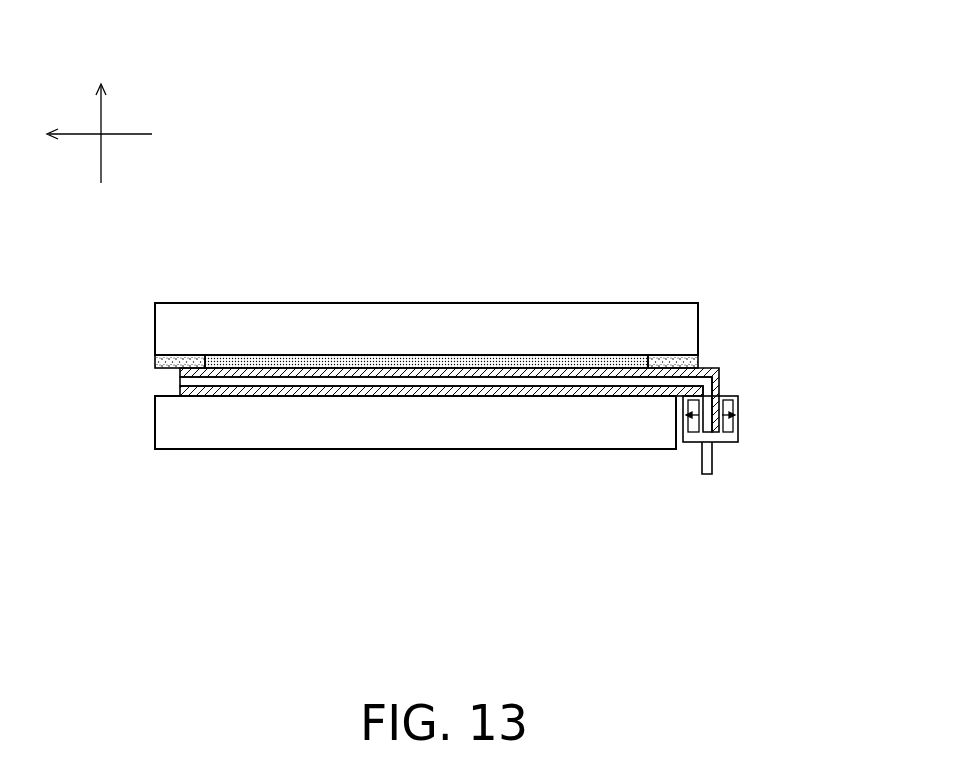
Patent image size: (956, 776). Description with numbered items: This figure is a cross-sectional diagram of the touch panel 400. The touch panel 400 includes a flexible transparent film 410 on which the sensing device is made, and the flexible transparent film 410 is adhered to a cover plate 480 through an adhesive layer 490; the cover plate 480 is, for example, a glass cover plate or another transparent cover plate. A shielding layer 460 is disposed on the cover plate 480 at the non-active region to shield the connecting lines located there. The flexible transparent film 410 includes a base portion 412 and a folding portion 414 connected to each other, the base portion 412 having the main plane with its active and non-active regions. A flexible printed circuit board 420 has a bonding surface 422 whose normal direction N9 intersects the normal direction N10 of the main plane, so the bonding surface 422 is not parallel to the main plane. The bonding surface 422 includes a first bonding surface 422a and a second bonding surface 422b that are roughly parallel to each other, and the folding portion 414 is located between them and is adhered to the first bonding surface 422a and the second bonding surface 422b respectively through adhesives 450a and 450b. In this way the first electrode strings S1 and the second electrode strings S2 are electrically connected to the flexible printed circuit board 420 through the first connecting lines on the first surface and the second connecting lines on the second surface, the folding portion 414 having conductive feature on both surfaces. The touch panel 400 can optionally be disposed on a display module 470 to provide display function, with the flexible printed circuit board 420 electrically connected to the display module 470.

The touch panel 400 is at (858, 622).
The flexible transparent film 410 is at (449, 476).
The base portion 412 is at (513, 379).
The folding portion 414 is at (682, 406).
The flexible printed circuit board 420 is at (720, 490).
The bonding surface 422 is at (720, 473).
The first bonding surface 422a is at (718, 432).
The second bonding surface 422b is at (700, 422).
The adhesive 450a is at (720, 398).
The adhesive 450b is at (688, 400).
The shielding layer 460 is at (172, 353).
The display module 470 is at (193, 428).
The cover plate 480 is at (405, 328).
The adhesive layer 490 is at (497, 356).
The first electrode strings S1 is at (399, 377).
The second electrode strings S2 is at (297, 397).
The normal direction of the bonding surface N9 is at (118, 134).
The normal direction of the main plane N10 is at (102, 113).